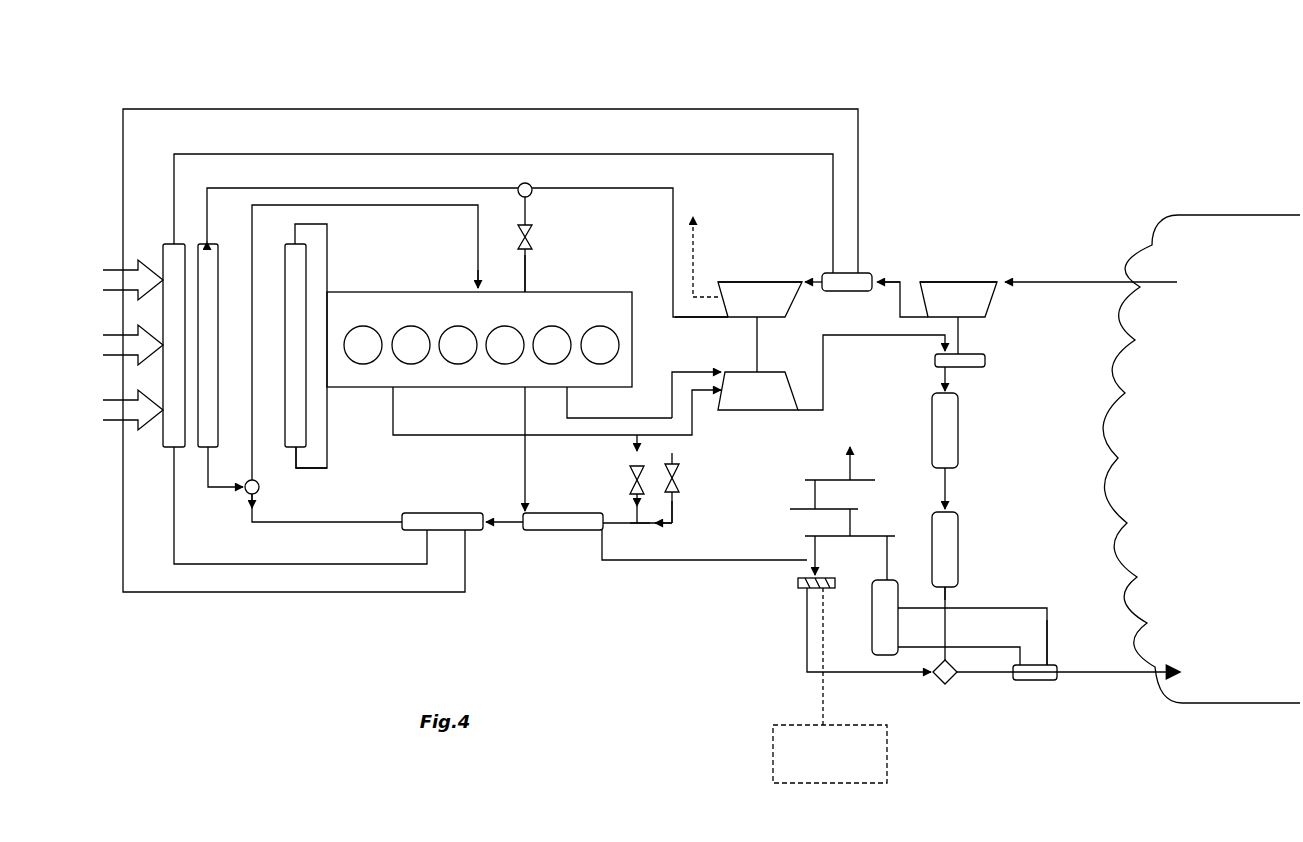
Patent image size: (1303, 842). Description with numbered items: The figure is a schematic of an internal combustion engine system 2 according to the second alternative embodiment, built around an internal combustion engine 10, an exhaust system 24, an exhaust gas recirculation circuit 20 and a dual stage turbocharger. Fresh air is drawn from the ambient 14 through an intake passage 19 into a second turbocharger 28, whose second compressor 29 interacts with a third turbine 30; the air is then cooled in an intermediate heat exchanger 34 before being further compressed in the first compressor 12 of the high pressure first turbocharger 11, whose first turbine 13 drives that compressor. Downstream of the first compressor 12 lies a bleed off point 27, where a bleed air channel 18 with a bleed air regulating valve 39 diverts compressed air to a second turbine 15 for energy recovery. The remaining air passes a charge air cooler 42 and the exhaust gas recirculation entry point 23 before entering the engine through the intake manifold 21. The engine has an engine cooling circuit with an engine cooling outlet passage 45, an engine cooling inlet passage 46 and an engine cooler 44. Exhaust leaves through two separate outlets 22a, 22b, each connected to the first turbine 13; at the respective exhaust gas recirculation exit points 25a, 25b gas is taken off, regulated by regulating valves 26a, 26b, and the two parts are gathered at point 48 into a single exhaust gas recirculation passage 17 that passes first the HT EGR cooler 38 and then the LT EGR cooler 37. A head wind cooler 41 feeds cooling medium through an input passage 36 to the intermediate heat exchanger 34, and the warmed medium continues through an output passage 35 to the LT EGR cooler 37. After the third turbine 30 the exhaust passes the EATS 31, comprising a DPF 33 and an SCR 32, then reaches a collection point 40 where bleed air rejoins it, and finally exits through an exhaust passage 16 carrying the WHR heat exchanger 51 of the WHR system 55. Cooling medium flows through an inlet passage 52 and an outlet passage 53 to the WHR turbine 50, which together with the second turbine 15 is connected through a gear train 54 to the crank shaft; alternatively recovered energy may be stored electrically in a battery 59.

The internal combustion engine system 2 is at (1184, 112).
The internal combustion engine 10 is at (391, 302).
The first turbocharger 11 is at (771, 259).
The first compressor 12 is at (748, 294).
The first turbine 13 is at (758, 391).
The ambient 14 is at (46, 341).
The second turbine 15 is at (798, 584).
The exhaust passage 16 is at (1104, 673).
The exhaust gas recirculation passage 17 is at (616, 518).
The bleed air channel 18 is at (527, 275).
The intake passage 19 is at (1062, 282).
The exhaust gas recirculation circuit 20 is at (704, 455).
The intake manifold 21 is at (474, 291).
The outlet 22a is at (568, 394).
The outlet 22b is at (400, 393).
The exhaust gas recirculation entry point 23 is at (246, 495).
The exhaust system 24 is at (897, 355).
The exhaust gas recirculation exit point 25a is at (668, 410).
The exhaust gas recirculation exit point 25b is at (634, 443).
The regulating valve 26a is at (679, 470).
The regulating valve 26b is at (636, 470).
The bleed off point 27 is at (532, 185).
The second turbocharger 28 is at (950, 258).
The second compressor 29 is at (958, 318).
The third turbine 30 is at (985, 362).
The Exhaust After Treatment System (EATS) 31 is at (1004, 472).
The Selective Catalytic Reduction catalyst (SCR) 32 is at (952, 418).
The Diesel Particulate Filter (DPF) 33 is at (950, 541).
The intermediate heat exchanger 34 is at (855, 287).
The output passage 35 is at (568, 109).
The input passage 36 is at (625, 154).
The low temperature exhaust gas recirculation cooler (LT EGR cooler) 37 is at (437, 513).
The high temperature exhaust gas recirculation cooler (HT EGR cooler) 38 is at (566, 534).
The bleed air regulating valve 39 is at (518, 247).
The collection point 40 is at (940, 680).
The head wind cooler 41 is at (166, 252).
The charge air cooler 42 is at (208, 312).
The engine cooler 44 is at (292, 341).
The engine cooling outlet passage 45 is at (312, 470).
The engine cooling inlet passage 46 is at (303, 222).
The gathering point 48 is at (646, 527).
The Waste Heat Recovery turbine (WHR turbine) 50 is at (882, 612).
The Waste Heat Recovery heat exchanger (WHR heat exchanger) 51 is at (1043, 681).
The inlet passage 52 is at (962, 647).
The outlet passage 53 is at (1003, 608).
The gear train 54 is at (820, 460).
The Waste Heat Recovery system (WHR system) 55 is at (1051, 585).
The battery 59 is at (773, 740).